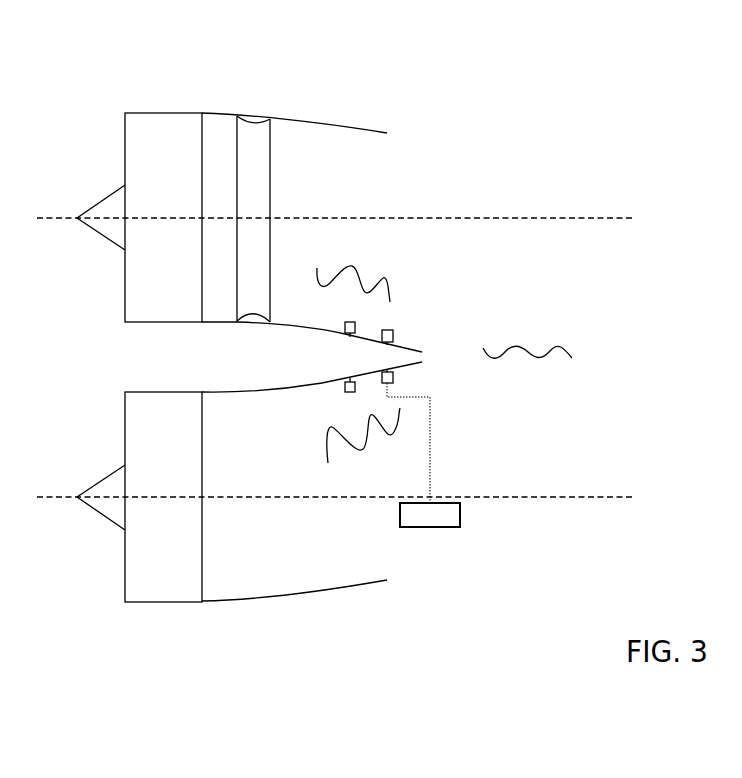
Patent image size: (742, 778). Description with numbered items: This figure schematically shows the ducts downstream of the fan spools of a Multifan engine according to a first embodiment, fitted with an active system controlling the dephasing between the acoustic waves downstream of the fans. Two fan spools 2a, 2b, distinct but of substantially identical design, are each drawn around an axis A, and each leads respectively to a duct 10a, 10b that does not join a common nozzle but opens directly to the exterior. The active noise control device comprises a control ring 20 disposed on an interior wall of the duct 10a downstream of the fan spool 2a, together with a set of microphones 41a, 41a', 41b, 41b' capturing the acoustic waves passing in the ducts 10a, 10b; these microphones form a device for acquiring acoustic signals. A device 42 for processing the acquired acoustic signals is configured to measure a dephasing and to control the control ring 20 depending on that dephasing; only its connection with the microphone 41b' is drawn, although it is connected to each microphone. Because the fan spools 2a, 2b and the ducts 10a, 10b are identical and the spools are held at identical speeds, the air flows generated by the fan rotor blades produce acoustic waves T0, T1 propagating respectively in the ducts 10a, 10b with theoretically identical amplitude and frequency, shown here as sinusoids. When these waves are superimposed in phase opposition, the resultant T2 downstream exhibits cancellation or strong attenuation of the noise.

The fan spool 2a is at (152, 116).
The fan spool 2b is at (153, 604).
The control ring 20 is at (255, 121).
The duct 10a is at (333, 181).
The duct 10b is at (263, 533).
The microphone 41a is at (316, 303).
The microphone 41a' is at (443, 323).
The microphone 41b is at (305, 407).
The microphone 41b' is at (443, 389).
The device for processing acoustic signals 42 is at (423, 455).
The acoustic wave T0 is at (352, 274).
The acoustic wave T1 is at (360, 446).
The resultant T2 is at (527, 343).
The engine axis A is at (335, 346).